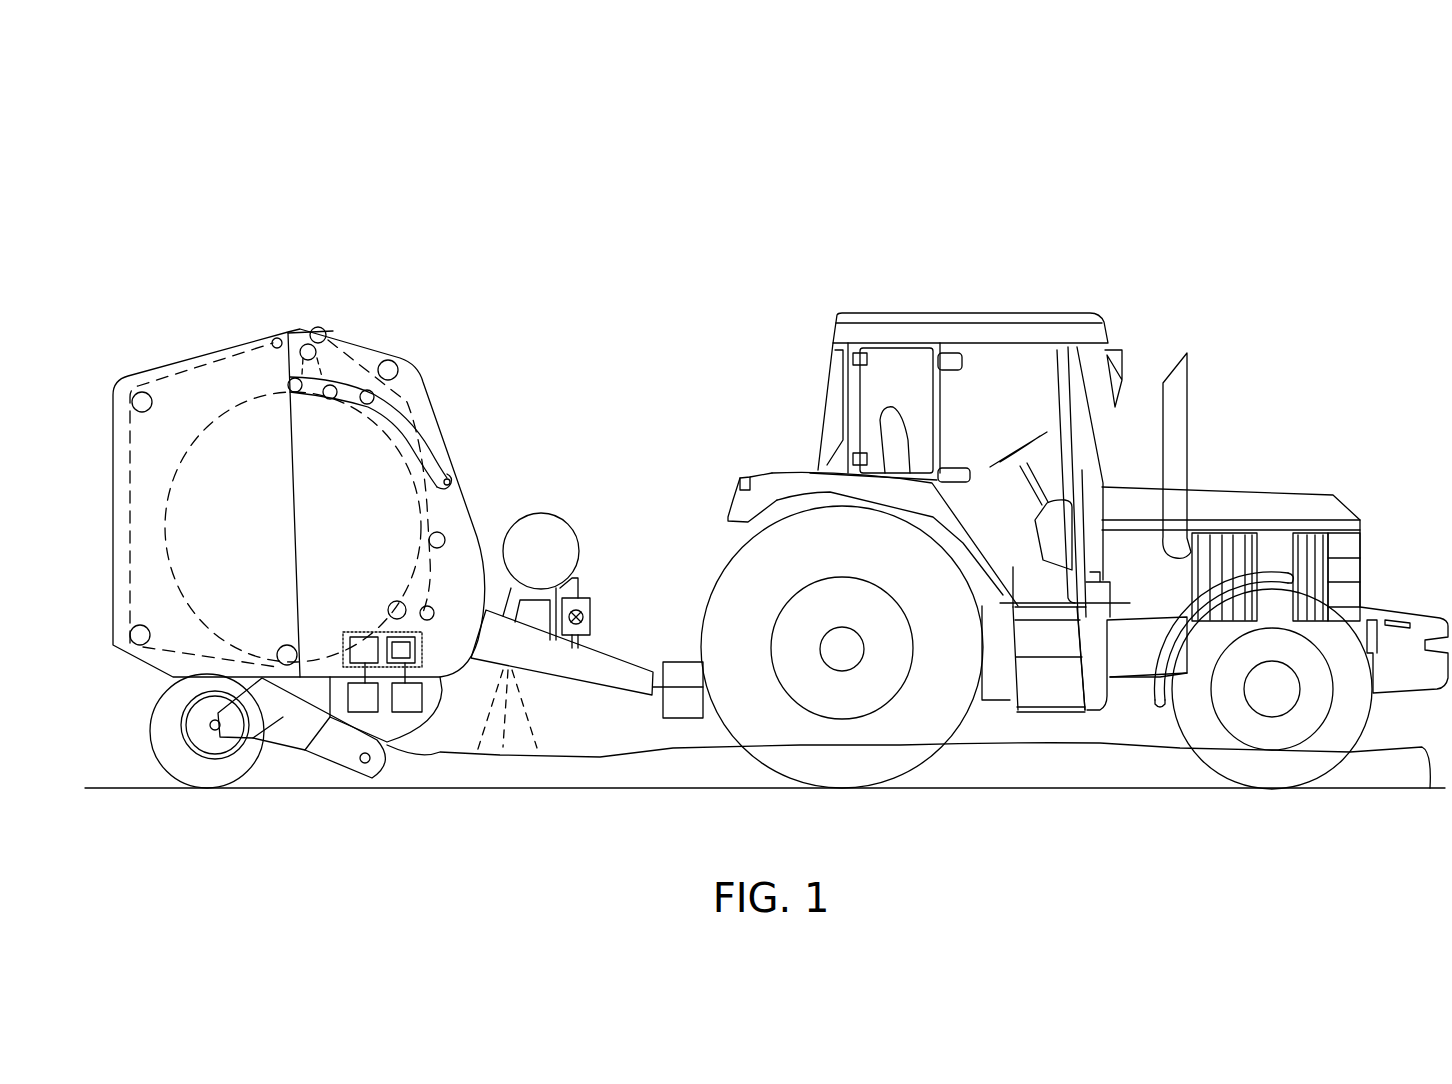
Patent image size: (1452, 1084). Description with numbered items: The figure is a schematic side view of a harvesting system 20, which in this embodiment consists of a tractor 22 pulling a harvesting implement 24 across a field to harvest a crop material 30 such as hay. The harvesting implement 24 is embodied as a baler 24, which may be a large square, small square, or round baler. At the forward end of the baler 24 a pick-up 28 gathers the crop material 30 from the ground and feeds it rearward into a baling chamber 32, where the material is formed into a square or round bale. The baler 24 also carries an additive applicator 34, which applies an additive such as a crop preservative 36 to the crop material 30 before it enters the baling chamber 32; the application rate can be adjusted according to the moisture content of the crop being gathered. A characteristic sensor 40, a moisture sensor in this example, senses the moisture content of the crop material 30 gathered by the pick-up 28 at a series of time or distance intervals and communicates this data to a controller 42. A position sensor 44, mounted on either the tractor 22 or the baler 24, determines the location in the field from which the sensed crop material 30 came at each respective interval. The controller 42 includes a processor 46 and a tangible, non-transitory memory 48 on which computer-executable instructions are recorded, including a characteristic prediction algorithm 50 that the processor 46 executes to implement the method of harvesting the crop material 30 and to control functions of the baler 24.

The harvesting system 20 is at (930, 138).
The tractor 22 is at (952, 314).
The harvesting implement 24 is at (362, 326).
The pick-up 28 is at (382, 776).
The crop material 30 is at (517, 777).
The baling chamber 32 is at (237, 462).
The additive applicator 34 is at (526, 563).
The crop preservative 36 is at (525, 708).
The characteristic sensor 40 is at (362, 693).
The controller 42 is at (373, 635).
The position sensor 44 is at (408, 700).
The processor 46 is at (355, 637).
The memory 48 is at (420, 647).
The characteristic prediction algorithm 50 is at (474, 643).